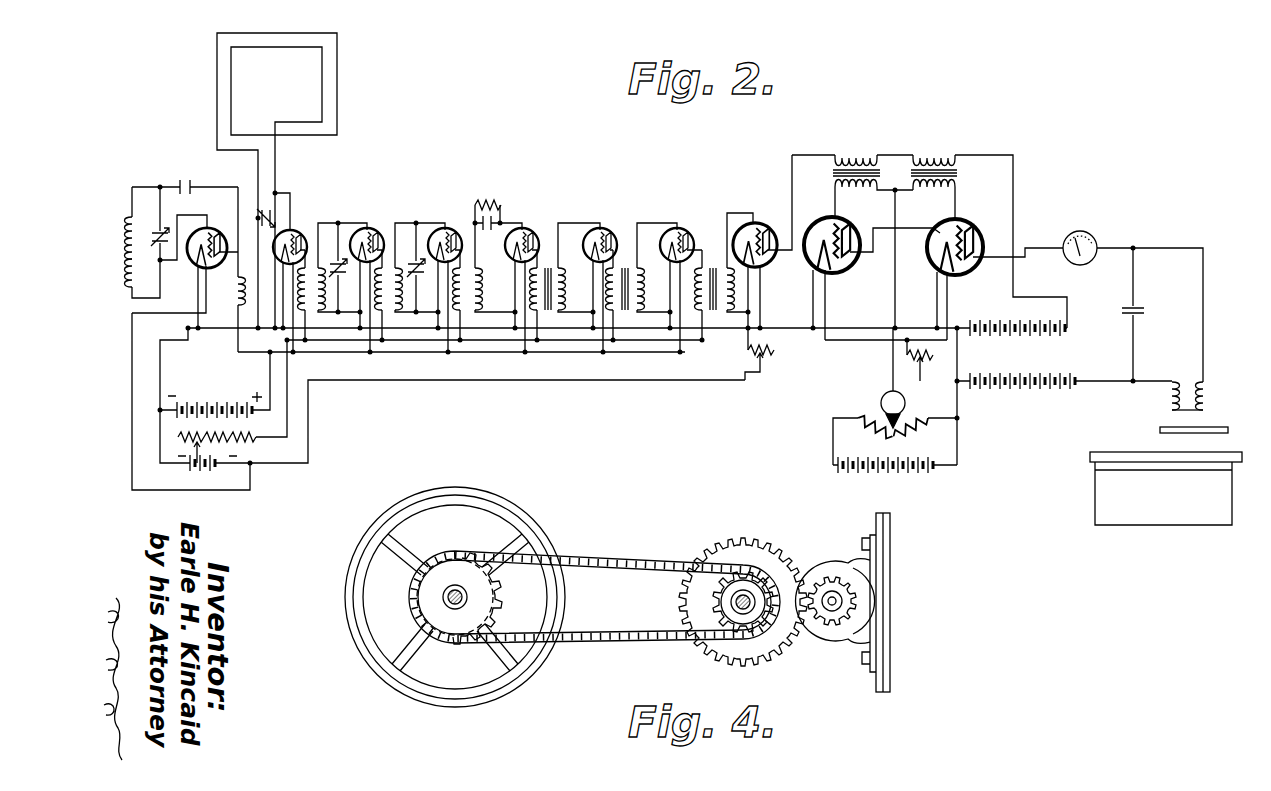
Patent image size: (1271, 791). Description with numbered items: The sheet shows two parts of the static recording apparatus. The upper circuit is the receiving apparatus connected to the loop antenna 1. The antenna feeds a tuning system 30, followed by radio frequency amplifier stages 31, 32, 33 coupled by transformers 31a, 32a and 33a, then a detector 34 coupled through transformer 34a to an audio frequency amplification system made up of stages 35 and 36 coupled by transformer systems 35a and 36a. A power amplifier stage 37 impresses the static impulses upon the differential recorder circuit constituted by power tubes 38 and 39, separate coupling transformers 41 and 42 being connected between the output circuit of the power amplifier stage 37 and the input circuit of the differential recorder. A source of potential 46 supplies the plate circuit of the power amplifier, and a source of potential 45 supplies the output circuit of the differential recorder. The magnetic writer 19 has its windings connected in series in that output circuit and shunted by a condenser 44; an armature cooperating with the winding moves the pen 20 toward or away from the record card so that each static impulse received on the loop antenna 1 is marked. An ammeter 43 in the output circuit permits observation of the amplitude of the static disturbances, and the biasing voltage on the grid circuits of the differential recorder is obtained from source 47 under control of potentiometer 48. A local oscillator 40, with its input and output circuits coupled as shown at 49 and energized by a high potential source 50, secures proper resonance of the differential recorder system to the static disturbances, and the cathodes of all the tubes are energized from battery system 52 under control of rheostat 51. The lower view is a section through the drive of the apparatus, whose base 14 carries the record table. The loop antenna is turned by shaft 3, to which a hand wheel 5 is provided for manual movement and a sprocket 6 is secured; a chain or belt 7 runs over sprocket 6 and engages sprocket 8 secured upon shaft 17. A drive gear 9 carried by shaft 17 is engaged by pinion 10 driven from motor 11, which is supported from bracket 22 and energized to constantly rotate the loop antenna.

In FIG. 2, the loop antenna 1 is at (337, 90).
In FIG. 2, the tuning system 30 is at (267, 206).
In FIG. 2, the radio frequency amplifier stage 31 is at (298, 230).
In FIG. 2, the radio frequency amplifier stage 32 is at (370, 230).
In FIG. 2, the radio frequency amplifier stage 33 is at (447, 230).
In FIG. 2, the detector 34 is at (524, 229).
In FIG. 2, the audio frequency amplifier stage 35 is at (603, 229).
In FIG. 2, the audio frequency amplifier stage 36 is at (680, 229).
In FIG. 2, the power amplifier stage 37 is at (765, 230).
In FIG. 2, the power tube 38 is at (850, 232).
In FIG. 2, the power tube 39 is at (967, 232).
In FIG. 2, the local oscillator 40 is at (209, 226).
In FIG. 2, the coupling transformer 31a is at (316, 318).
In FIG. 2, the coupling transformer 32a is at (392, 318).
In FIG. 2, the coupling transformer 33a is at (470, 318).
In FIG. 2, the coupling transformer 34a is at (548, 318).
In FIG. 2, the coupling transformer system 35a is at (628, 318).
In FIG. 2, the coupling transformer system 36a is at (705, 318).
In FIG. 2, the coupling transformer 41 is at (867, 158).
In FIG. 2, the coupling transformer 42 is at (947, 156).
In FIG. 2, the ammeter 43 is at (1077, 234).
In FIG. 2, the condenser 44 is at (1154, 307).
In FIG. 2, the source of potential 45 is at (1032, 396).
In FIG. 2, the source of potential 46 is at (1022, 342).
In FIG. 2, the biasing source 47 is at (920, 478).
In FIG. 2, the potentiometer 48 is at (872, 418).
In FIG. 2, the oscillator coupling 49 is at (130, 268).
In FIG. 2, the high potential source 50 is at (211, 397).
In FIG. 2, the rheostat 51 is at (238, 440).
In FIG. 2, the battery system 52 is at (210, 468).
In FIG. 2, the magnetic writer 19 is at (1168, 402).
In FIG. 2, the pen 20 is at (1242, 420).
In FIG. 2, the base 14 is at (1095, 490).
In FIG. 4, the shaft 3 is at (443, 605).
In FIG. 4, the hand wheel 5 is at (493, 506).
In FIG. 4, the sprocket 6 is at (503, 600).
In FIG. 4, the chain or belt 7 is at (598, 556).
In FIG. 4, the sprocket 8 is at (718, 600).
In FIG. 4, the drive gear 9 is at (730, 544).
In FIG. 4, the pinion 10 is at (848, 610).
In FIG. 4, the motor 11 is at (816, 626).
In FIG. 4, the shaft 17 is at (746, 592).
In FIG. 4, the bracket 22 is at (878, 577).